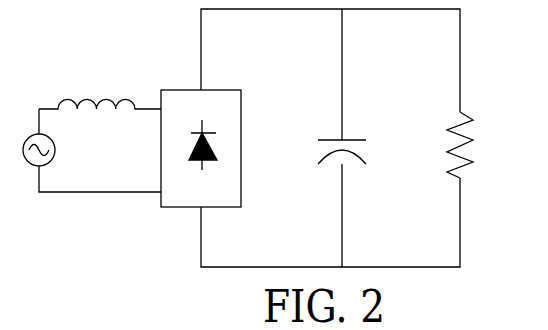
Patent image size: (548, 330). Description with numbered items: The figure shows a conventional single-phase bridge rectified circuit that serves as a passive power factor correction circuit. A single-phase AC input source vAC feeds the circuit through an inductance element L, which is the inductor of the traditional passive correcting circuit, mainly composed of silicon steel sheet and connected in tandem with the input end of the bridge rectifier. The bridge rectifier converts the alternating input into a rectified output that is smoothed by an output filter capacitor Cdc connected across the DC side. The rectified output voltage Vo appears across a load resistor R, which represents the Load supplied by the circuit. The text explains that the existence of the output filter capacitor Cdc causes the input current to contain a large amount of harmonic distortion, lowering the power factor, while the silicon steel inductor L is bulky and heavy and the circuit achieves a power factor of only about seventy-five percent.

The inductance element L is at (100, 86).
The single-phase AC input source vAC is at (92, 150).
The output filter capacitor Cdc is at (320, 138).
The load resistor R is at (446, 145).
The output voltage Vo is at (505, 182).
The load Load is at (500, 213).